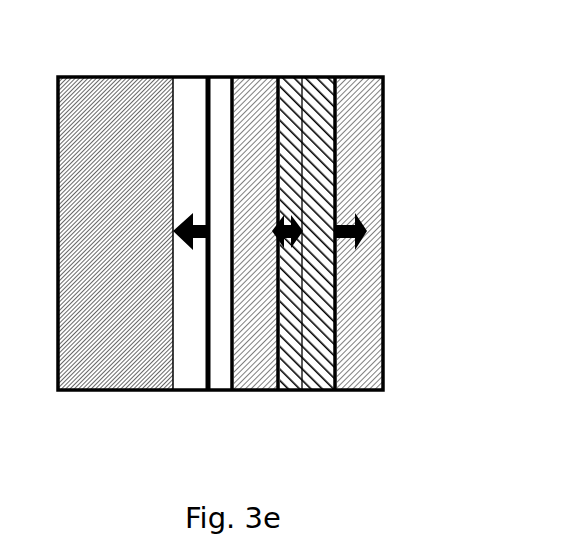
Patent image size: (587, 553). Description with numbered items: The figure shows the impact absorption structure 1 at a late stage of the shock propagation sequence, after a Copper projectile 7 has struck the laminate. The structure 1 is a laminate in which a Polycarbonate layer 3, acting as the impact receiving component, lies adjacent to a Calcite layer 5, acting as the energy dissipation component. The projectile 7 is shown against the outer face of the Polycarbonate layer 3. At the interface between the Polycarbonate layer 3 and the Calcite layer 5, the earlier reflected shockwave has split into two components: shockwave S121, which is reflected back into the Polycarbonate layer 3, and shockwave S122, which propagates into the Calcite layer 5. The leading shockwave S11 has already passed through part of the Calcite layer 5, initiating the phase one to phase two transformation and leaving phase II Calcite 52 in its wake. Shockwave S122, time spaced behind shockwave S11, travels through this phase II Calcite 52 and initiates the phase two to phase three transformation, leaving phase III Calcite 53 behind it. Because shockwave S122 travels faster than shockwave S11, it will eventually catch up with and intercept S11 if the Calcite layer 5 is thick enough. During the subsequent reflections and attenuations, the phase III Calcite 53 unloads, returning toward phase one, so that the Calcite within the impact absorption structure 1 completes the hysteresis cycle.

The impact absorption structure 1 is at (402, 56).
The Copper projectile 7 is at (72, 85).
The Polycarbonate layer 3 is at (183, 378).
The shockwave S121 is at (206, 110).
The phase III Calcite 53 is at (250, 130).
The shockwave S122 is at (273, 390).
The phase II Calcite 52 is at (300, 135).
The shockwave S11 is at (335, 330).
The Calcite layer 5 is at (365, 177).